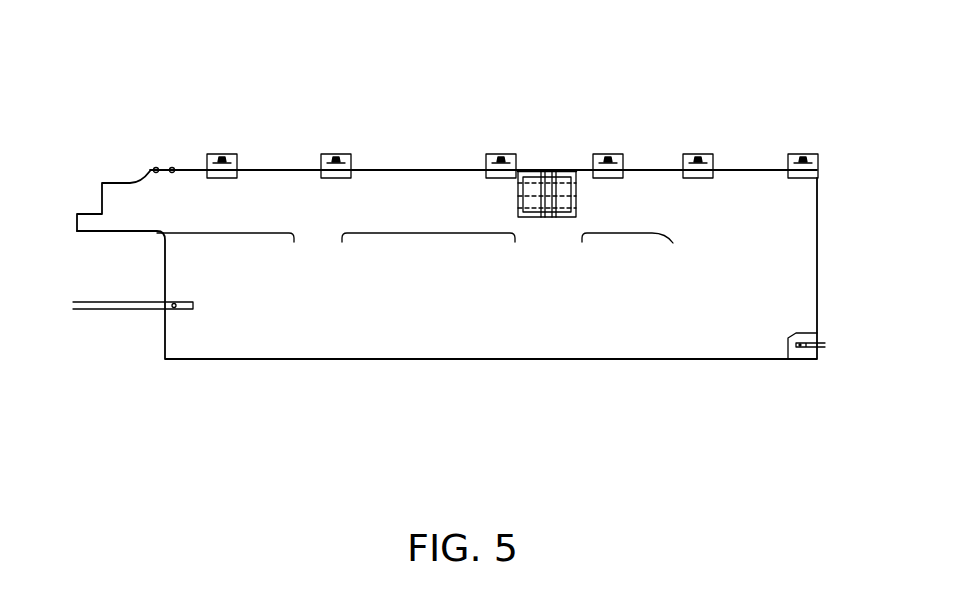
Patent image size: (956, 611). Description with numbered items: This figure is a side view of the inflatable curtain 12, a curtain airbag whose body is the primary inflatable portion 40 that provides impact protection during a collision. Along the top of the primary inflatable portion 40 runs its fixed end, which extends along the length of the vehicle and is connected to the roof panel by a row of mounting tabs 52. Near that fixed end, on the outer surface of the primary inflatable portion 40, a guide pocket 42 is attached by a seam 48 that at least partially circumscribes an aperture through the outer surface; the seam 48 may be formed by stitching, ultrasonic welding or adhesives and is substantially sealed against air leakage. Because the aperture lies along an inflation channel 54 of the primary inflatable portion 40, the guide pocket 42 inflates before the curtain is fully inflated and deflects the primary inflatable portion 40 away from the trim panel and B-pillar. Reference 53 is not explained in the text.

The inflatable curtain 12 is at (495, 109).
The primary inflatable portion 40 is at (590, 359).
The guide pocket 42 is at (577, 190).
The seam 48 is at (572, 207).
The mounting tabs 52 is at (230, 155).
The top rail 53 is at (742, 168).
The inflation channel 54 is at (213, 234).